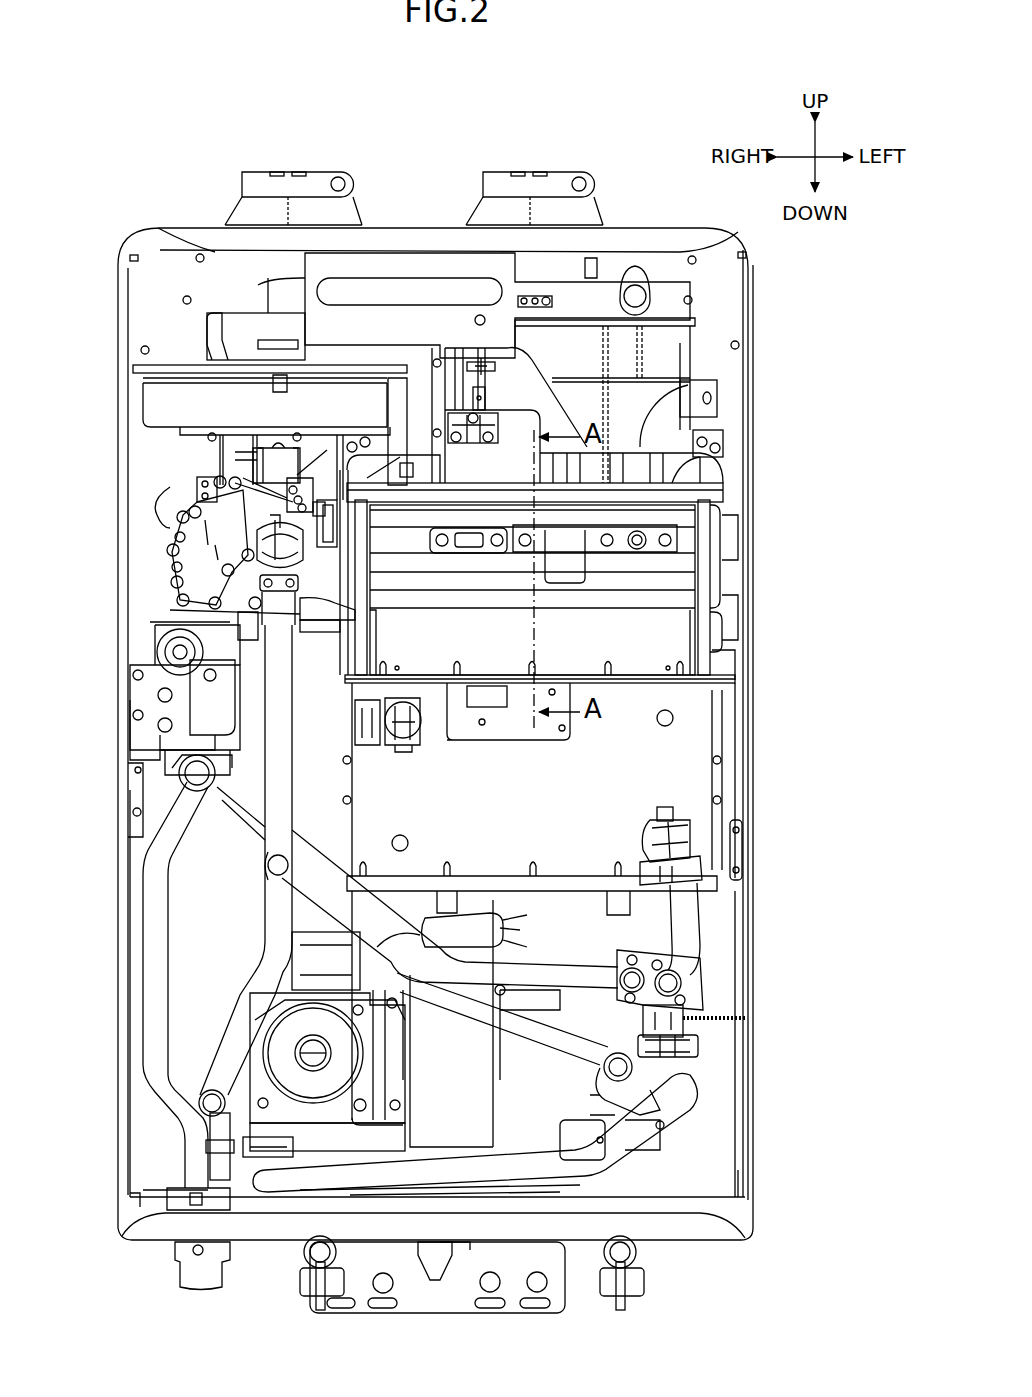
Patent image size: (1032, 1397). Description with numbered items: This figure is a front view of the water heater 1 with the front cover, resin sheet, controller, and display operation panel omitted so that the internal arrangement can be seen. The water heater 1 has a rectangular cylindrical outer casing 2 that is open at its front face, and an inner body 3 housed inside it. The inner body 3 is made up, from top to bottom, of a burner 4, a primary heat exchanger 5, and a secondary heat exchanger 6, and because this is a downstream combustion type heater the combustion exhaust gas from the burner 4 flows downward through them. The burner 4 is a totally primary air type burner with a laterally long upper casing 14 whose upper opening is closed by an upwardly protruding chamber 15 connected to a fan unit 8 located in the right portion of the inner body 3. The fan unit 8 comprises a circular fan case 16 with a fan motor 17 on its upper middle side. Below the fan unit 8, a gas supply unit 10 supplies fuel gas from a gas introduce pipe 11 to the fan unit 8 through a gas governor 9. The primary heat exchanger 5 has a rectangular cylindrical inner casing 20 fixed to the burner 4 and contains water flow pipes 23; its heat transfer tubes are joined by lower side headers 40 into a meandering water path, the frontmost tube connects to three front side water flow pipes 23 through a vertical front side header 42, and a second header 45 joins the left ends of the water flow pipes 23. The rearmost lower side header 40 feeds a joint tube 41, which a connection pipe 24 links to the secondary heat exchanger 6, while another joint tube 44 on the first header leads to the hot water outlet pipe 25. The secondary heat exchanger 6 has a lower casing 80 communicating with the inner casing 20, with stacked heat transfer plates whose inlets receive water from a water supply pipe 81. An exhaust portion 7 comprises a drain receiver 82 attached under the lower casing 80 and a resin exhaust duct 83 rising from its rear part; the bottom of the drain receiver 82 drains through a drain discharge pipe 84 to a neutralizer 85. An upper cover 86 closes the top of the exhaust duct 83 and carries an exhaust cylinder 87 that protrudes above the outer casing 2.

The water heater 1 is at (668, 132).
The outer casing 2 is at (762, 522).
The inner body 3 is at (739, 622).
The burner 4 is at (720, 455).
The primary heat exchanger 5 is at (724, 597).
The secondary heat exchanger 6 is at (722, 740).
The exhaust portion 7 is at (696, 364).
The fan unit 8 is at (205, 330).
The gas governor 9 is at (165, 680).
The gas supply unit 10 is at (162, 545).
The gas introduce pipe 11 is at (186, 796).
The upper casing 14 is at (700, 491).
The chamber 15 is at (640, 405).
The fan case 16 is at (160, 408).
The fan motor 17 is at (245, 325).
The inner casing 20 is at (672, 645).
The water flow pipes 23 is at (192, 510).
The connection pipe 24 is at (300, 722).
The hot water outlet pipe 25 is at (277, 623).
The lower side header 40 is at (724, 650).
The joint tube 41 is at (300, 607).
The front side header 42 is at (258, 600).
The joint tube 44 is at (200, 478).
The second header 45 is at (714, 541).
The lower casing 80 is at (680, 793).
The water supply pipe 81 is at (692, 945).
The drain receiver 82 is at (566, 907).
The exhaust duct 83 is at (665, 340).
The drain discharge pipe 84 is at (645, 928).
The neutralizer 85 is at (452, 1108).
The upper cover 86 is at (680, 288).
The exhaust cylinder 87 is at (592, 274).